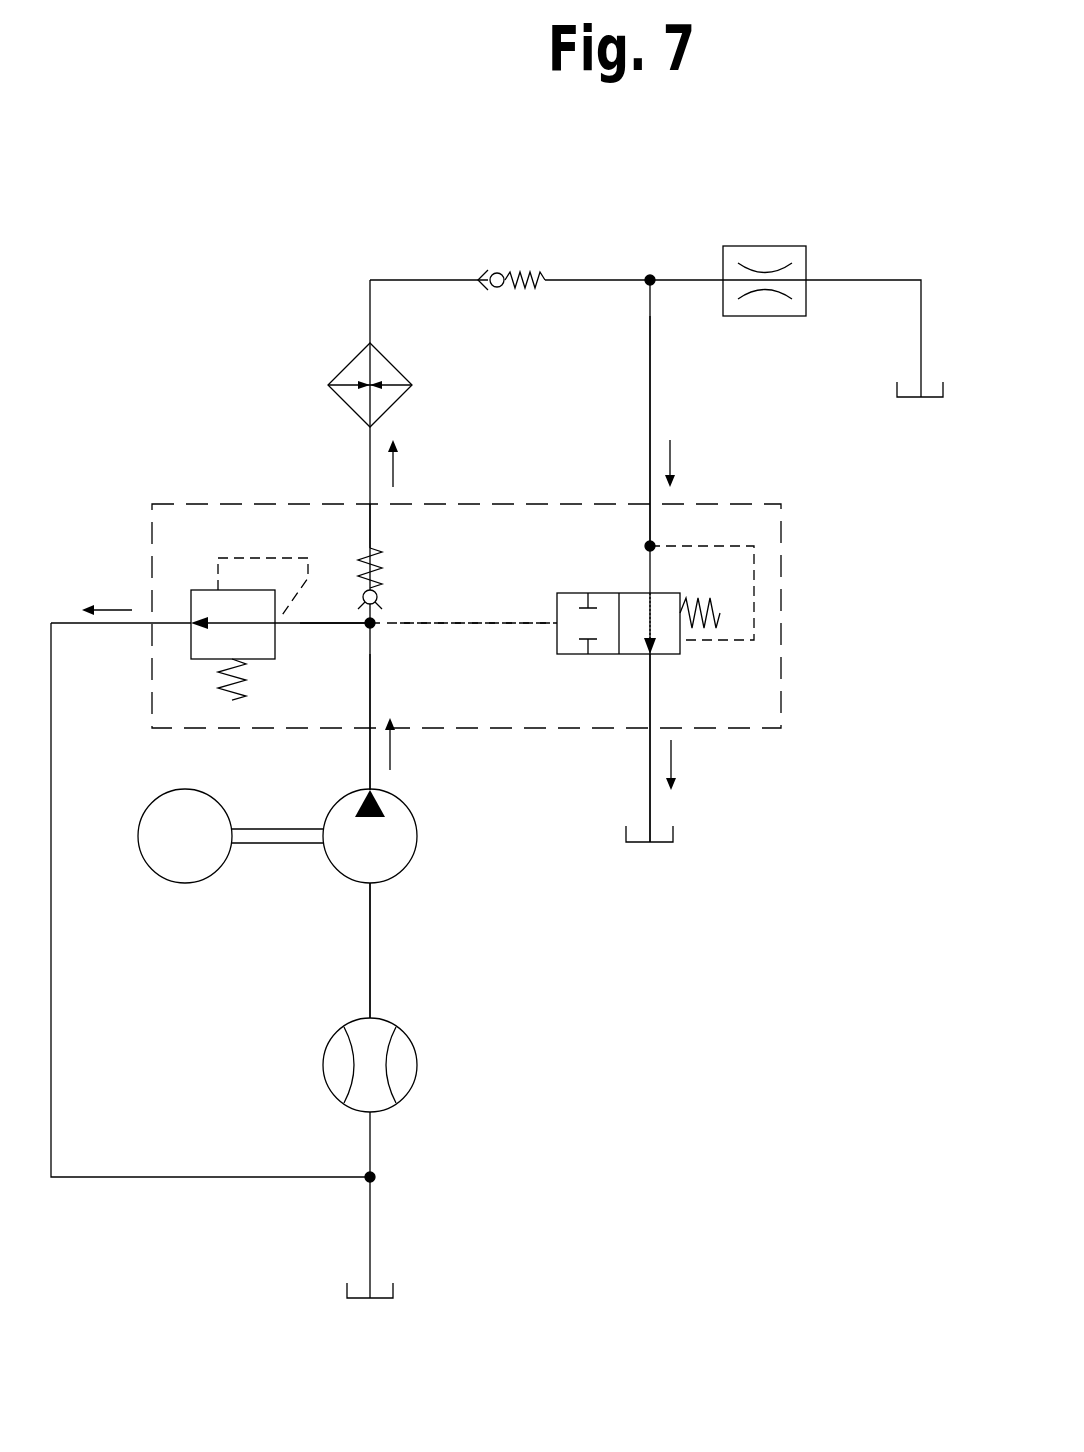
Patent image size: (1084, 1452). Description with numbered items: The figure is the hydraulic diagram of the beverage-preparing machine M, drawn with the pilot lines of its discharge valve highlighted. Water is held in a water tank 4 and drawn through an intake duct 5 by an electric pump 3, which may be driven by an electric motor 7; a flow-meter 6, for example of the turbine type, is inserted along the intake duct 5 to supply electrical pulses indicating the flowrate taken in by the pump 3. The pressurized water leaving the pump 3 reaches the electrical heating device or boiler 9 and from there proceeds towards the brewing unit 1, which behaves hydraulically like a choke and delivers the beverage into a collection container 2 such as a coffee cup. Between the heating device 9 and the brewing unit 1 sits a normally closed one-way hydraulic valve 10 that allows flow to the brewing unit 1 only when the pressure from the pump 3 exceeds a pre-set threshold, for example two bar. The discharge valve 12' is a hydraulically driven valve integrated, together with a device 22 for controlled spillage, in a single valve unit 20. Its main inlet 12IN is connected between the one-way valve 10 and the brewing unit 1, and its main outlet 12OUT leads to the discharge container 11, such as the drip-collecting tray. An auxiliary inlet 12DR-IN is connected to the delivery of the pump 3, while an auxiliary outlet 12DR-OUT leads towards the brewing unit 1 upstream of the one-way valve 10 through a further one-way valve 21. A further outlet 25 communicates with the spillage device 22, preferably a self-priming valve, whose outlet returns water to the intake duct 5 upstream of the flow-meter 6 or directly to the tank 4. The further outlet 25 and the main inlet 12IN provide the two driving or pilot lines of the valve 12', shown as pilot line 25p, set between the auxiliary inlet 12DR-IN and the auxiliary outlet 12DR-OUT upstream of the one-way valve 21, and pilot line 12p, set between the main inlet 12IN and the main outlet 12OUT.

The machine for preparing beverages M is at (280, 258).
The brewing unit 1 is at (773, 240).
The collection container 2 is at (909, 397).
The electric pump 3 is at (385, 862).
The water tank 4 is at (383, 1298).
The intake duct 5 is at (370, 965).
The flow-meter 6 is at (345, 1078).
The electric motor 7 is at (175, 853).
The electrical heating device or boiler 9 is at (325, 365).
The one-way hydraulic valve 10 is at (512, 268).
The discharge container 11 is at (662, 842).
The discharge valve 12' is at (623, 531).
The main inlet 12IN is at (652, 527).
The main outlet 12OUT is at (652, 690).
The auxiliary inlet 12DR-IN is at (372, 668).
The auxiliary outlet 12DR-OUT is at (365, 530).
The pilot line 12p is at (740, 640).
The valve unit 20 is at (150, 480).
The further one-way valve 21 is at (386, 565).
The device for controlled spillage 22 is at (195, 572).
The further outlet 25 is at (336, 627).
The pilot line 25p is at (490, 622).